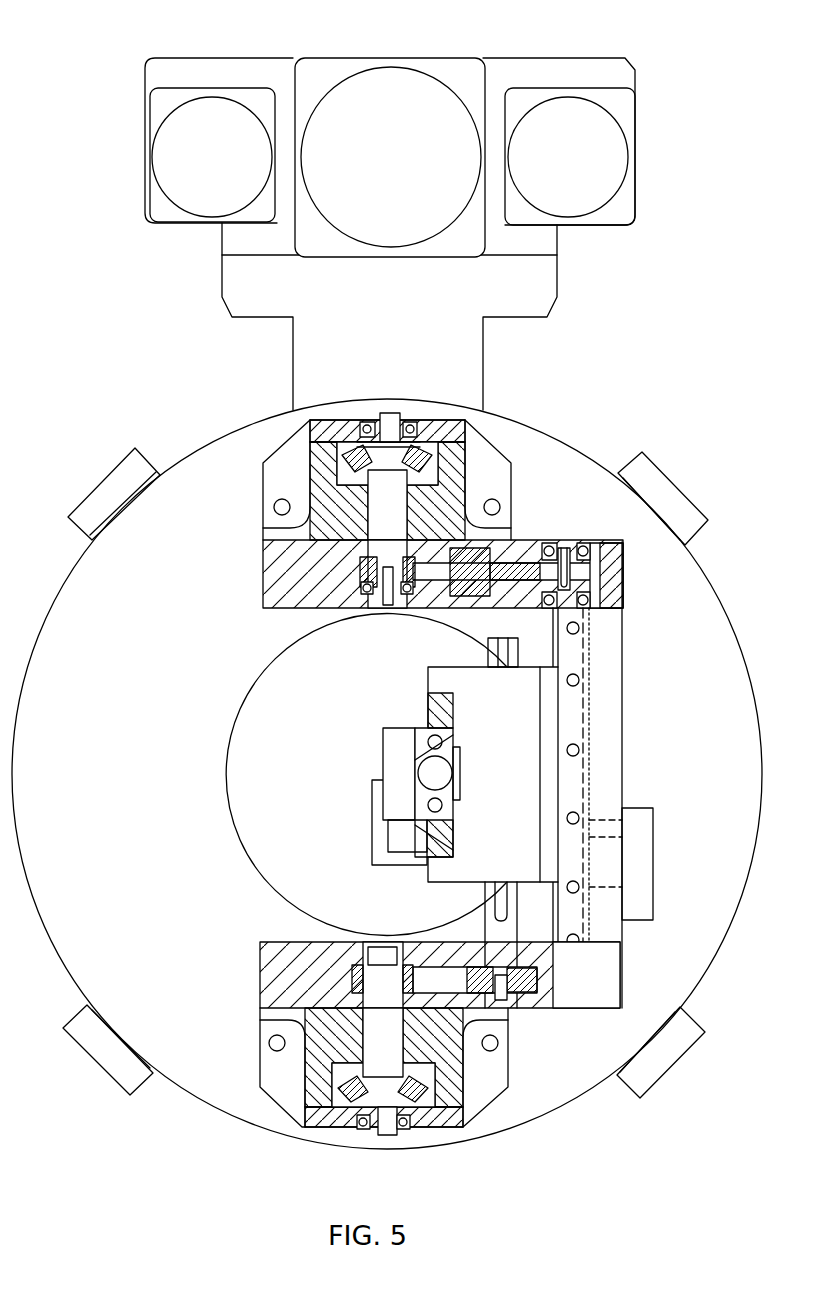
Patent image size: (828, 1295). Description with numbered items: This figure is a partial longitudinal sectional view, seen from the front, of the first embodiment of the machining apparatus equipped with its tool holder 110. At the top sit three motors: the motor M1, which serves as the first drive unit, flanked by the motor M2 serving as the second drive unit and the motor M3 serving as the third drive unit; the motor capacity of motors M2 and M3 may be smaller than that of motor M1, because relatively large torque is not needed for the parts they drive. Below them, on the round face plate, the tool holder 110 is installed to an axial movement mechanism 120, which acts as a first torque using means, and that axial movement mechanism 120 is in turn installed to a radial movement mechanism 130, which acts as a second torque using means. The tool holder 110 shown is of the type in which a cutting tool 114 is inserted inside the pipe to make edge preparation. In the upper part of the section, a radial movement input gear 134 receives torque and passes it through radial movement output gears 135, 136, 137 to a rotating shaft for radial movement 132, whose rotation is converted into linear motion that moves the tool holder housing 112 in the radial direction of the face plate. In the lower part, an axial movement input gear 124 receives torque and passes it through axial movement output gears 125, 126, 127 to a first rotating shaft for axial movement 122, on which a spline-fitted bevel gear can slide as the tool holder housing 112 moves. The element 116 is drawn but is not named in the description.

The motor M1 is at (405, 78).
The motor M2 is at (160, 152).
The motor M3 is at (610, 160).
The tool holder 110 is at (360, 769).
The tool holder housing 112 is at (523, 742).
The tool 114 is at (402, 837).
The holding member 116 is at (402, 745).
The axial movement mechanism 120 is at (416, 714).
The first rotating shaft for axial movement 122 is at (498, 922).
The axial movement input gear 124 is at (355, 1093).
The axial movement output gear 125 is at (357, 977).
The axial movement output gear 126 is at (435, 977).
The axial movement output gear 127 is at (535, 995).
The radial movement mechanism 130 is at (636, 685).
The rotating shaft for radial movement 132 is at (565, 598).
The radial movement input gear 134 is at (440, 452).
The radial movement output gear 135 is at (362, 577).
The radial movement output gear 136 is at (515, 568).
The radial movement output gear 137 is at (588, 548).